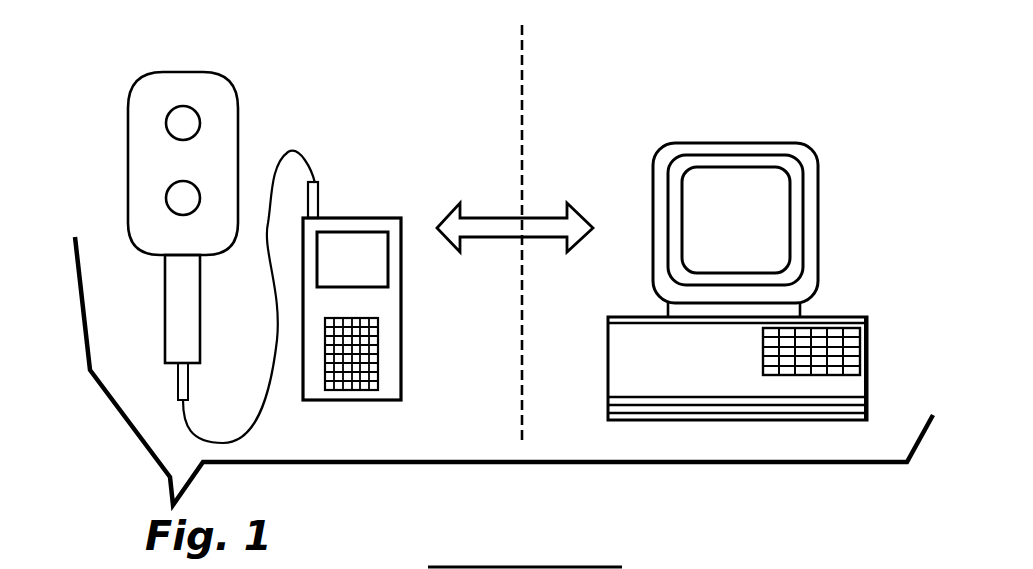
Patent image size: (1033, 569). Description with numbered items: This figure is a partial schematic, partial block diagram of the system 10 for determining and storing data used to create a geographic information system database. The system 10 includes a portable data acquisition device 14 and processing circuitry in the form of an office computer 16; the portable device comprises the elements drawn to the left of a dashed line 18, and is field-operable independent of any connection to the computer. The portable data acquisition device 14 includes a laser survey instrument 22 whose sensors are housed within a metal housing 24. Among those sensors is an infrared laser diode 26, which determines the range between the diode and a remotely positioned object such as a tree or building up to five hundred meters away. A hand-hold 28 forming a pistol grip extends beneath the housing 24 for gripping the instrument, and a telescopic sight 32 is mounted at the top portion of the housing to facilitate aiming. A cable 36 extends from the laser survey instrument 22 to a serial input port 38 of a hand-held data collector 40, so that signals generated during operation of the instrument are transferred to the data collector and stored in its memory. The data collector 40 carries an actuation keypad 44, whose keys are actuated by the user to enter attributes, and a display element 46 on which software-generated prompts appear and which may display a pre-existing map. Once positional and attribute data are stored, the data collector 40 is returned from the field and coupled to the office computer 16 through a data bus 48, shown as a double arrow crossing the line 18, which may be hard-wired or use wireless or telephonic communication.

The system 10 is at (390, 40).
The portable data acquisition device 14 is at (192, 189).
The office computer 16 is at (818, 197).
The line 18 is at (522, 125).
The laser survey instrument 22 is at (192, 147).
The housing 24 is at (240, 128).
The infrared laser diode 26 is at (171, 186).
The hand-hold 28 is at (175, 287).
The telescopic sight 32 is at (173, 110).
The cable 36 is at (198, 430).
The RS-232 input port 38 is at (320, 190).
The hand-held data collector 40 is at (392, 269).
The actuation keypad 44 is at (363, 358).
The display element 46 is at (360, 268).
The data bus 48 is at (498, 217).